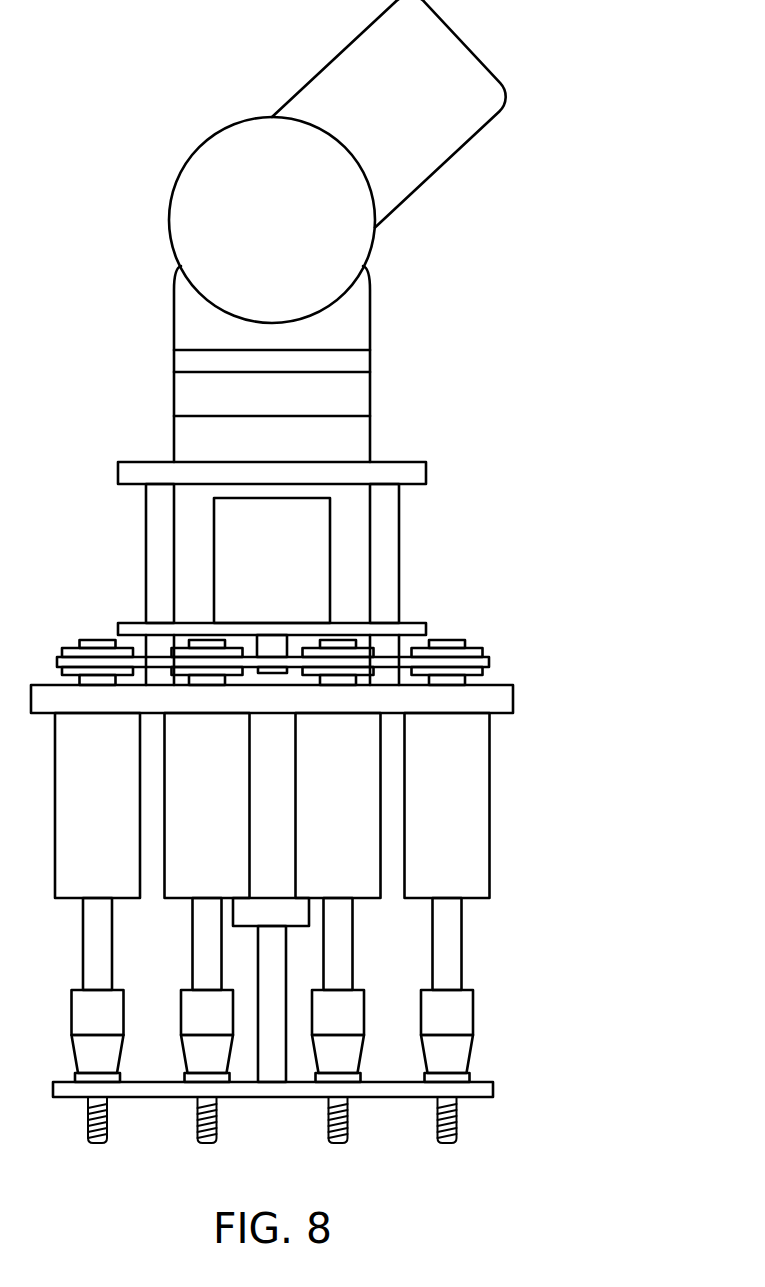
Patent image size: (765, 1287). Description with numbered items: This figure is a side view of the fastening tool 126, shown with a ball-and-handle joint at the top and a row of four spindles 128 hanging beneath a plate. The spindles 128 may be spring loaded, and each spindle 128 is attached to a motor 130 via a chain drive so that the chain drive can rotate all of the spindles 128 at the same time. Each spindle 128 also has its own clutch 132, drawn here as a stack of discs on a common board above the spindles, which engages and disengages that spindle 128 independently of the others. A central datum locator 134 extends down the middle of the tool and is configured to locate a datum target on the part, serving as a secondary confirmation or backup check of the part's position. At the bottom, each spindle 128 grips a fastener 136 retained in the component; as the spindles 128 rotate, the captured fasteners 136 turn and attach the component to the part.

The fastening tool 126 is at (415, 231).
The spindle 128 is at (512, 1030).
The motor 130 is at (330, 567).
The clutch 132 is at (482, 650).
The datum locator 134 is at (286, 960).
The fastener 136 is at (513, 1137).